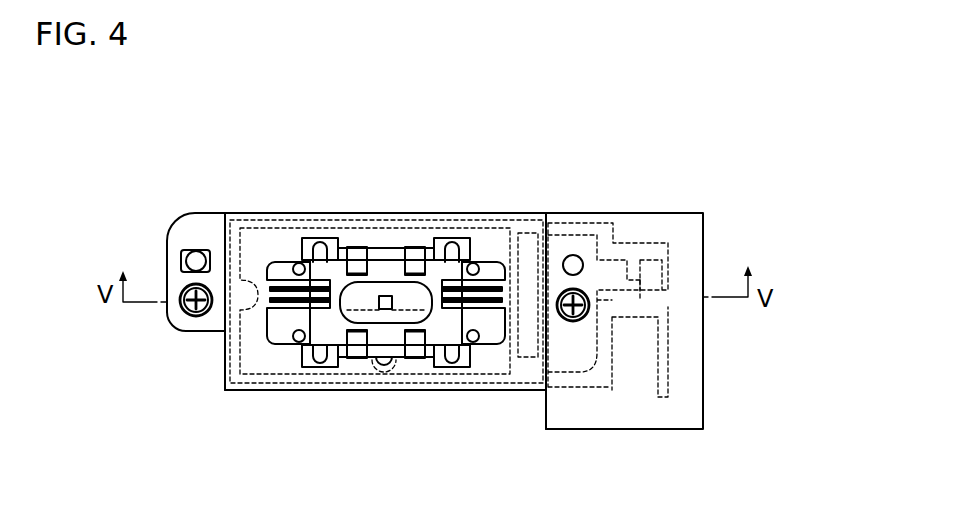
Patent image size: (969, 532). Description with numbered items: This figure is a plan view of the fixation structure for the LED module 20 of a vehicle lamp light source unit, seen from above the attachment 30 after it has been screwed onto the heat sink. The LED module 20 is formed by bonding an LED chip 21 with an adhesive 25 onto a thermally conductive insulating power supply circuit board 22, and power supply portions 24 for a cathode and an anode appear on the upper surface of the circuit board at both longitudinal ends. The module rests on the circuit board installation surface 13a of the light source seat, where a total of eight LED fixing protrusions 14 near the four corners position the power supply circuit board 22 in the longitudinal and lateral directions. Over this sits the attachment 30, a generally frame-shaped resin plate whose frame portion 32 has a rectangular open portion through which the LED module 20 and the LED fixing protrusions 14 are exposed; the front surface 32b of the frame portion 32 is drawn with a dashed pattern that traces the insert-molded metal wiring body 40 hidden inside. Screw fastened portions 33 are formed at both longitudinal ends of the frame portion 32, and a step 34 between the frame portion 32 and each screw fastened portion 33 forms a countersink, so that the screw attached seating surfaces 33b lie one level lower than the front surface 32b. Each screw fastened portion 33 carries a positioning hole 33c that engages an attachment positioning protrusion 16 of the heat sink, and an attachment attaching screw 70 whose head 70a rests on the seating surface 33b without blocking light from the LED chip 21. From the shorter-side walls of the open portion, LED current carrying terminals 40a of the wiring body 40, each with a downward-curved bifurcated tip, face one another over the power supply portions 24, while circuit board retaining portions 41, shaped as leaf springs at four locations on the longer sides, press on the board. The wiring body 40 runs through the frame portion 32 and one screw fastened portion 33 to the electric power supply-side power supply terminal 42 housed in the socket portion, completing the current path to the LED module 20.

The attachment 30 is at (659, 171).
The screw fastened portion 33 is at (183, 211).
The screw attached seating surface 33b is at (188, 322).
The positioning hole 33c is at (196, 252).
The step 34 is at (217, 236).
The attachment positioning protrusion 16 is at (180, 258).
The attachment attaching screw 70 is at (374, 387).
The head 70a is at (187, 307).
The frame portion 32 is at (449, 269).
The front surface 32b is at (513, 238).
The electric power supply-side power supply terminal 42 is at (668, 347).
The LED module 20 is at (337, 298).
The LED chip 21 is at (385, 296).
The circuit board installation surface 13a is at (282, 318).
The power supply portion 24 is at (312, 238).
The LED fixing protrusion 14 is at (312, 258).
The adhesive 25 is at (362, 290).
The power supply circuit board 22 is at (417, 272).
The metal wiring body 40 is at (342, 365).
The LED current carrying terminal 40a is at (296, 340).
The circuit board retaining portion 41 is at (355, 342).